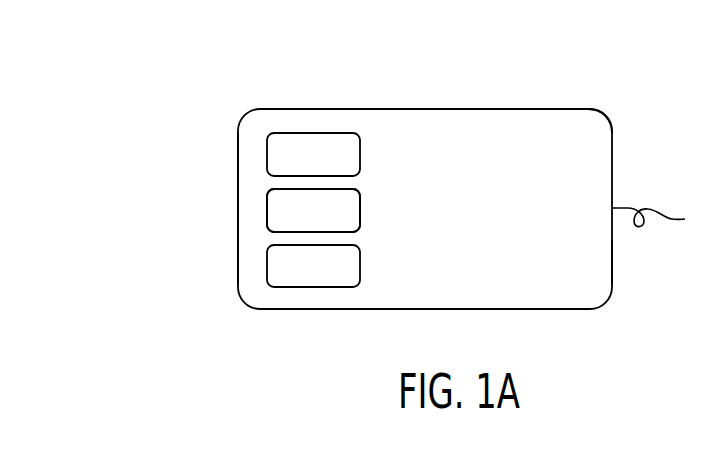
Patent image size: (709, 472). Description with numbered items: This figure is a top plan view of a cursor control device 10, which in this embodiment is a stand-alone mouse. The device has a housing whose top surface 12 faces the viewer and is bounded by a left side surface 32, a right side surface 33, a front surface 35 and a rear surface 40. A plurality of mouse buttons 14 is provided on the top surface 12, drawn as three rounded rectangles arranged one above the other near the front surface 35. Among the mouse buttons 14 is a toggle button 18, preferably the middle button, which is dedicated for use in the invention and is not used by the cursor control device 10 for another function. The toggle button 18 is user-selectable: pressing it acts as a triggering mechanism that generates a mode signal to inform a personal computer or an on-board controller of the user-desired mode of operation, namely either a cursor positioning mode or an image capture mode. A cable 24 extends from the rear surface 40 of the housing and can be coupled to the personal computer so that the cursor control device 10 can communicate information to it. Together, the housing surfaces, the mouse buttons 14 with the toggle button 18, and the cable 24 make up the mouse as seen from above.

The cursor control device 10 is at (245, 112).
The top surface 12 is at (593, 132).
The mouse buttons 14 is at (303, 128).
The toggle button 18 is at (256, 205).
The cable 24 is at (648, 204).
The left side surface 32 is at (552, 312).
The right side surface 33 is at (555, 106).
The front surface 35 is at (238, 268).
The rear surface 40 is at (614, 264).